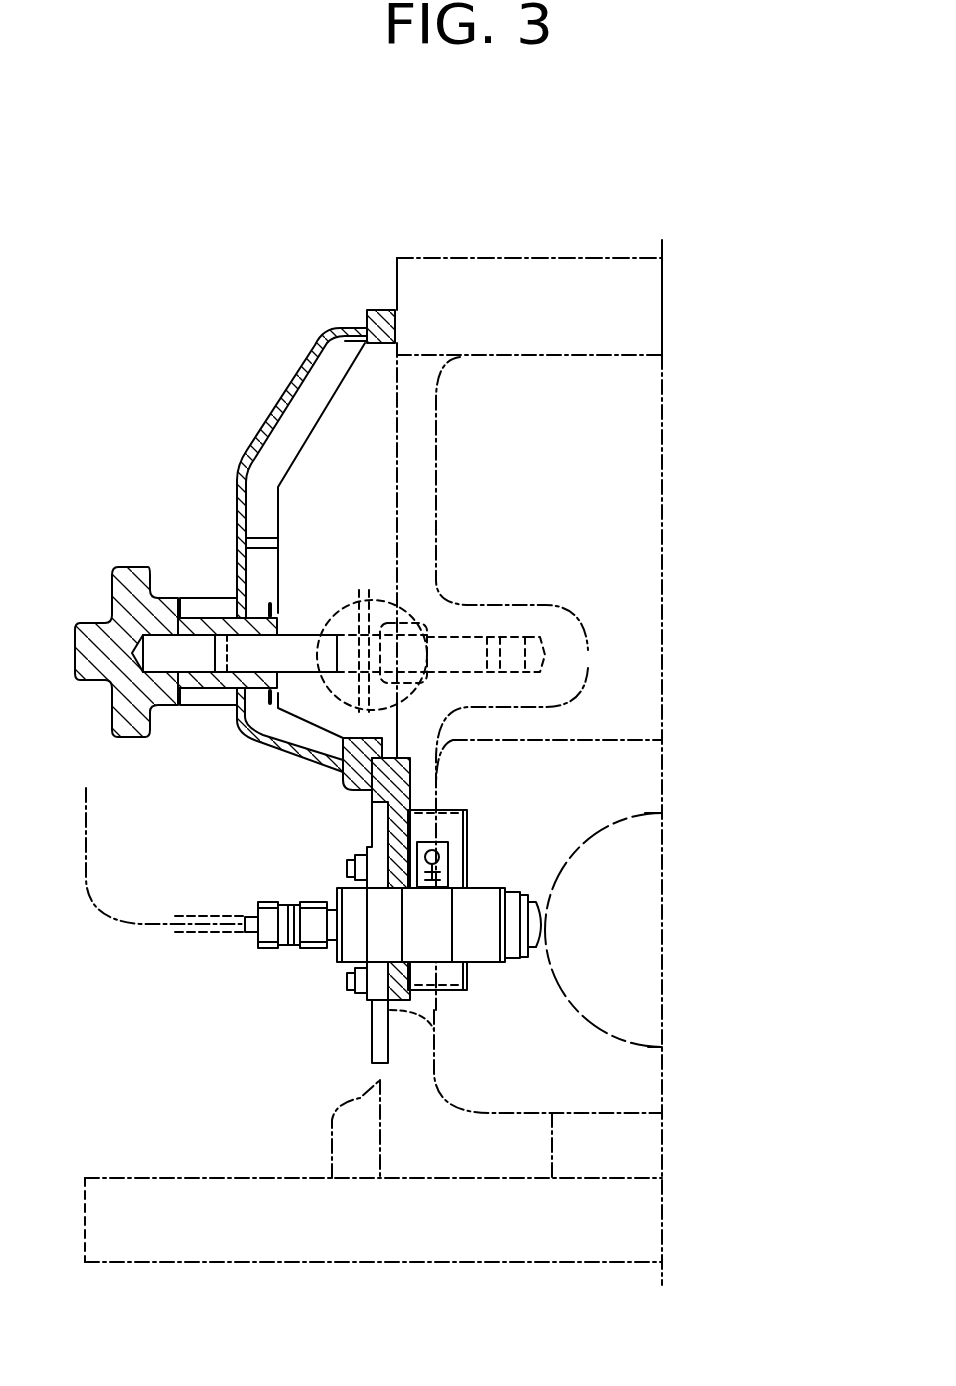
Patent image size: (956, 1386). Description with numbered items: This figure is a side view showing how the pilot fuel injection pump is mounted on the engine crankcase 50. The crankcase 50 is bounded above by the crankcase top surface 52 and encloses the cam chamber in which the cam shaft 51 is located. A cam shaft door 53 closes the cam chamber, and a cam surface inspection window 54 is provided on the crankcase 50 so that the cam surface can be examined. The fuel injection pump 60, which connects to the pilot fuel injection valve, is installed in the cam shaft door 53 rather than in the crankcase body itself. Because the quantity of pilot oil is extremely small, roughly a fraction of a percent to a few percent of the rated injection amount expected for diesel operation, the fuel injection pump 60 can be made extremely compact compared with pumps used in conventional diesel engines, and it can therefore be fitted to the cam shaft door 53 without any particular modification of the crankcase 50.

The crankcase 50 is at (630, 343).
The cam shaft 51 is at (632, 885).
The crankcase top surface 52 is at (590, 258).
The cam shaft door 53 is at (364, 813).
The cam surface inspection window 54 is at (280, 400).
The fuel injection pump 60 is at (327, 965).